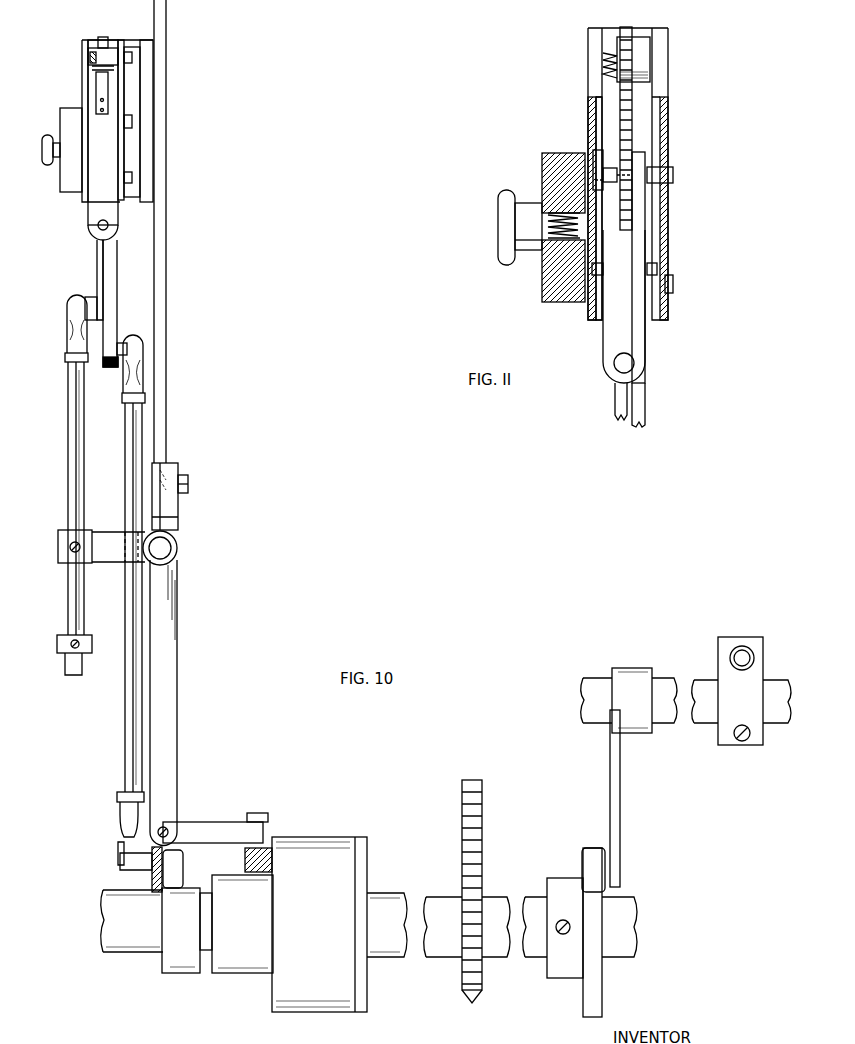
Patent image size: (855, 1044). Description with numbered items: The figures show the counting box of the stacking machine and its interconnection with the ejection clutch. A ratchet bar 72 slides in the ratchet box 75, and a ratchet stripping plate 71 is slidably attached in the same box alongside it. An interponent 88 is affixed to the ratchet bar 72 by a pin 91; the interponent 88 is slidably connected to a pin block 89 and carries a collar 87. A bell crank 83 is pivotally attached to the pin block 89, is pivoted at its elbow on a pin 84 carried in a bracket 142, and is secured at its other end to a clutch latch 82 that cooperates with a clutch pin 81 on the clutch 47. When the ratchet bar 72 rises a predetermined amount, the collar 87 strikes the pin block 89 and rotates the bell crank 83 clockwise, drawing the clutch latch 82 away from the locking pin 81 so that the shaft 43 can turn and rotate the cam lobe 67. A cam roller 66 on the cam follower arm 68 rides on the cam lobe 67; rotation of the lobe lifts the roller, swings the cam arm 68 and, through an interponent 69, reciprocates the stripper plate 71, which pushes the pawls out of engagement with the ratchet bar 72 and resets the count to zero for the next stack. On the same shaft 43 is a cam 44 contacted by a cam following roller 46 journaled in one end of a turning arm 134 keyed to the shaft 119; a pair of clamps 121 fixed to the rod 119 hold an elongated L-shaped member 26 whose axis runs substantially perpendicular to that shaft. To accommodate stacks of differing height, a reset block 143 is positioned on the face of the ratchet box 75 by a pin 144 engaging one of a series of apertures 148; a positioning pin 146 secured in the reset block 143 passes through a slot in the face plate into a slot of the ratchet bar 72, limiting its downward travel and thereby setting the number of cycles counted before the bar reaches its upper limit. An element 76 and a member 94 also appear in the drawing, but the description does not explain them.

In FIG. 10, the elongated L-shaped member 26 is at (746, 646).
In FIG. 10, the shaft 43 is at (390, 893).
In FIG. 10, the cam 44 is at (600, 995).
In FIG. 10, the cam following roller 46 is at (590, 848).
In FIG. 10, the clutch 47 is at (335, 837).
In FIG. 10, the cam roller 66 is at (175, 868).
In FIG. 10, the cam lobe 67 is at (165, 962).
In FIG. 10, the cam follower arm 68 is at (150, 865).
In FIG. 10, the interponent 69 is at (118, 726).
In FIG. 10, the ratchet stripping plate 71 is at (117, 265).
In FIG. 11, the ratchet stripping plate 71 is at (648, 215).
In FIG. 10, the ratchet bar 72 is at (97, 266).
In FIG. 11, the ratchet bar 72 is at (630, 130).
In FIG. 11, the ratchet box 75 is at (662, 55).
In FIG. 10, the lever 76 is at (112, 215).
In FIG. 11, the lever 76 is at (642, 343).
In FIG. 10, the clutch pin 81 is at (245, 863).
In FIG. 10, the clutch latch 82 is at (205, 822).
In FIG. 10, the bell crank 83 is at (170, 692).
In FIG. 10, the pin 84 is at (177, 548).
In FIG. 10, the collar 87 is at (57, 640).
In FIG. 10, the interponent 88 is at (84, 590).
In FIG. 10, the pin block 89 is at (90, 530).
In FIG. 10, the pin 91 is at (67, 305).
In FIG. 10, the knob 94 is at (50, 135).
In FIG. 11, the knob 94 is at (504, 190).
In FIG. 10, the rod 119 is at (594, 678).
In FIG. 10, the clamps 121 is at (718, 642).
In FIG. 10, the turning arm 134 is at (622, 840).
In FIG. 10, the bracket 142 is at (177, 465).
In FIG. 10, the reset block 143 is at (60, 108).
In FIG. 11, the reset block 143 is at (550, 153).
In FIG. 11, the pin 144 is at (542, 262).
In FIG. 11, the positioning pin 146 is at (607, 165).
In FIG. 11, the apertures 148 is at (590, 110).